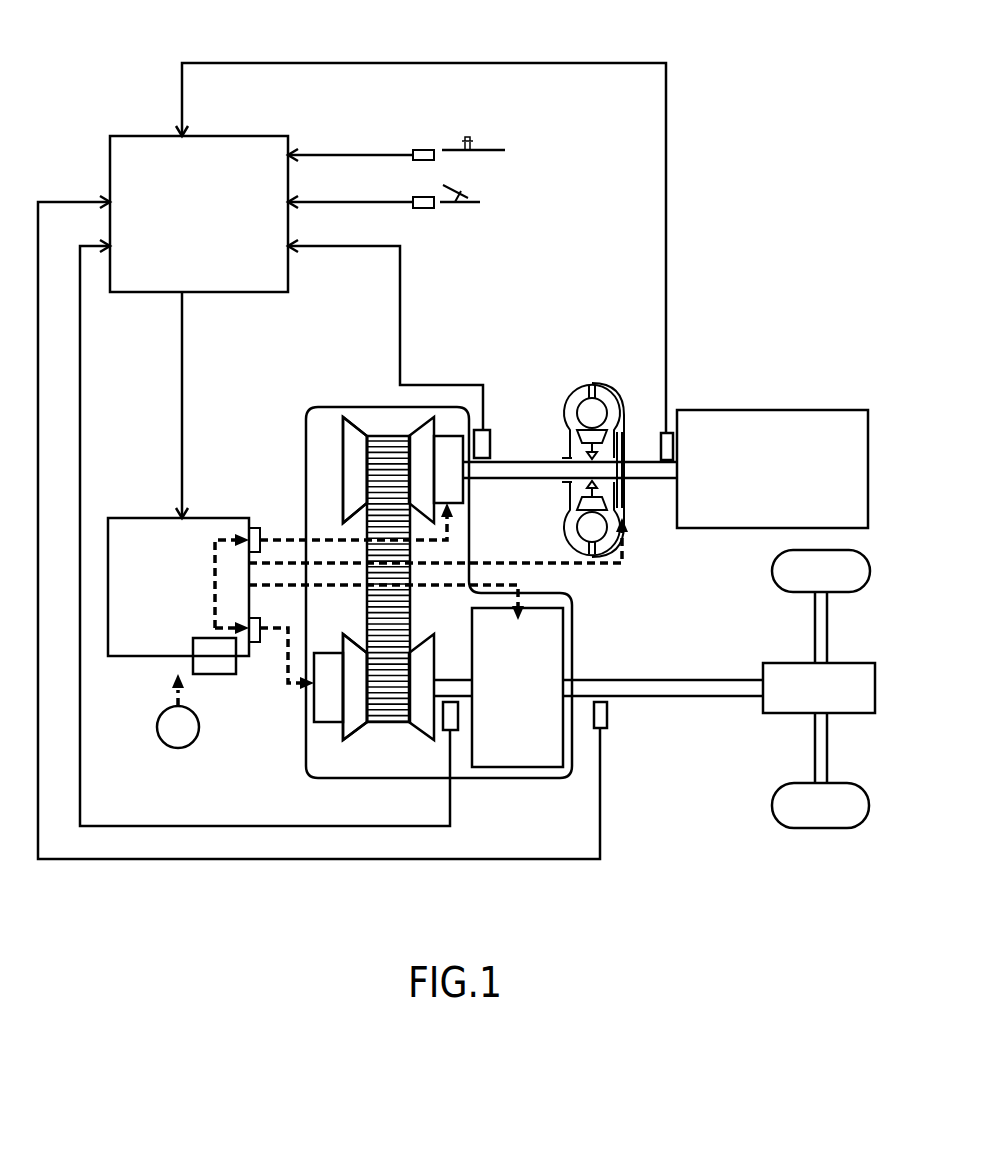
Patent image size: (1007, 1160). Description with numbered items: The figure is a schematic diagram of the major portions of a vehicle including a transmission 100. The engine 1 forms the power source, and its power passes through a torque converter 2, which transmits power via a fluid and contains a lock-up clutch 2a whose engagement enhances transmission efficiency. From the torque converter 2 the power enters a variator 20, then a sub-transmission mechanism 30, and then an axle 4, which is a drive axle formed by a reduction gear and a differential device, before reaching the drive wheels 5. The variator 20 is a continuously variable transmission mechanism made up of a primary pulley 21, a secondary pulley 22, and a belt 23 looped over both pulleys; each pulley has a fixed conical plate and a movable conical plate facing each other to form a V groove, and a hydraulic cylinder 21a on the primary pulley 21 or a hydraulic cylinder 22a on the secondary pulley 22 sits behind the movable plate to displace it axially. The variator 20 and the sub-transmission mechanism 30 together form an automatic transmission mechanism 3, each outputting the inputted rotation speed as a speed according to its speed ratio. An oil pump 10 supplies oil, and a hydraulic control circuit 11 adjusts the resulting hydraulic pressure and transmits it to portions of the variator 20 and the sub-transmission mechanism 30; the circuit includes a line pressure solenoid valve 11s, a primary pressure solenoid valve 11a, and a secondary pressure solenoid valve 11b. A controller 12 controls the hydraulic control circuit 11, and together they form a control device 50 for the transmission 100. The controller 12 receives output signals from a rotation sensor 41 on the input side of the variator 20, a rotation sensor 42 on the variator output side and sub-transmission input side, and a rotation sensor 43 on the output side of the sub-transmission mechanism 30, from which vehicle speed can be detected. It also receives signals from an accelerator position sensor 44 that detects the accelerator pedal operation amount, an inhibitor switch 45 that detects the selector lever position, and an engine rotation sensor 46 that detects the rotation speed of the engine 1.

The transmission 100 is at (89, 88).
The engine 1 is at (853, 425).
The torque converter 2 is at (621, 418).
The lock-up clutch 2a is at (622, 492).
The automatic transmission mechanism 3 is at (357, 406).
The axle 4 is at (878, 688).
The drive wheels 5 is at (871, 573).
The oil pump 10 is at (160, 720).
The hydraulic control circuit 11 is at (206, 527).
The primary pressure solenoid valve 11a is at (256, 528).
The secondary pressure solenoid valve 11b is at (254, 636).
The line pressure solenoid valve 11s is at (216, 662).
The controller 12 is at (204, 295).
The variator 20 is at (328, 440).
The primary pulley 21 is at (360, 469).
The hydraulic cylinder 21a is at (447, 448).
The secondary pulley 22 is at (358, 706).
The hydraulic cylinder 22a is at (322, 712).
The belt 23 is at (391, 434).
The sub-transmission mechanism 30 is at (553, 640).
The rotation sensor 41 is at (477, 430).
The rotation sensor 42 is at (456, 732).
The rotation sensor 43 is at (608, 712).
The accelerator position sensor 44 is at (425, 208).
The inhibitor switch 45 is at (427, 150).
The engine rotation sensor 46 is at (665, 447).
The control device 50 is at (217, 377).